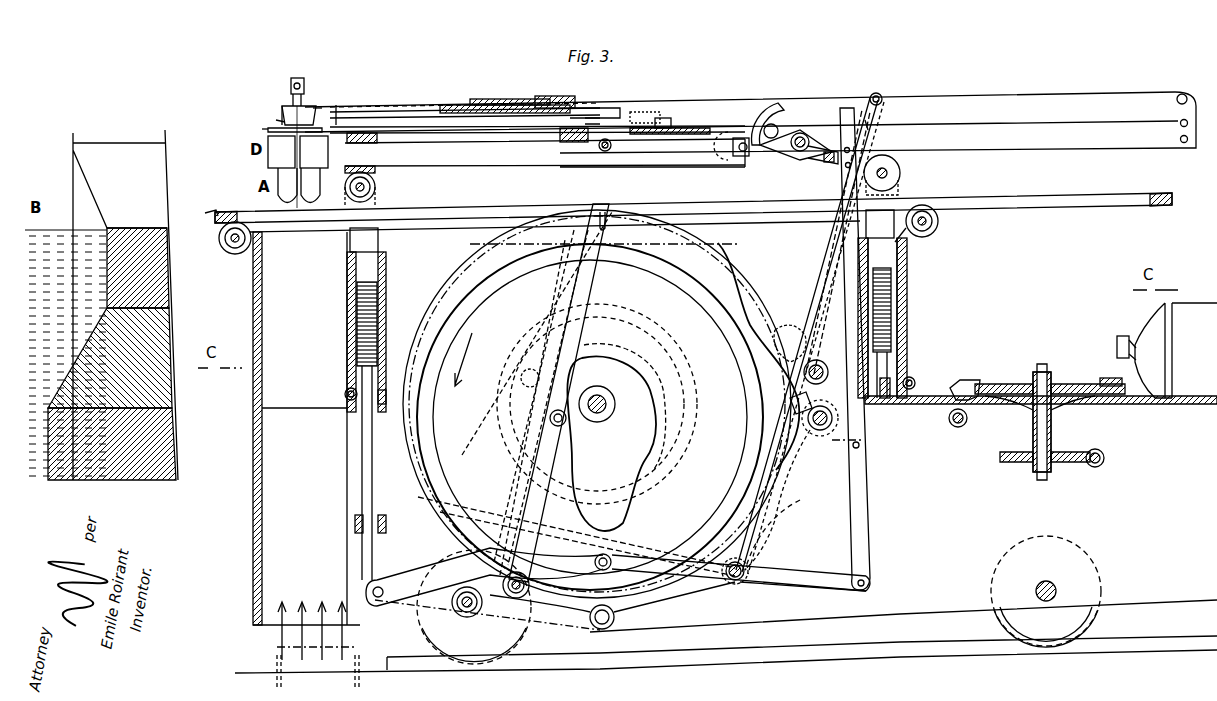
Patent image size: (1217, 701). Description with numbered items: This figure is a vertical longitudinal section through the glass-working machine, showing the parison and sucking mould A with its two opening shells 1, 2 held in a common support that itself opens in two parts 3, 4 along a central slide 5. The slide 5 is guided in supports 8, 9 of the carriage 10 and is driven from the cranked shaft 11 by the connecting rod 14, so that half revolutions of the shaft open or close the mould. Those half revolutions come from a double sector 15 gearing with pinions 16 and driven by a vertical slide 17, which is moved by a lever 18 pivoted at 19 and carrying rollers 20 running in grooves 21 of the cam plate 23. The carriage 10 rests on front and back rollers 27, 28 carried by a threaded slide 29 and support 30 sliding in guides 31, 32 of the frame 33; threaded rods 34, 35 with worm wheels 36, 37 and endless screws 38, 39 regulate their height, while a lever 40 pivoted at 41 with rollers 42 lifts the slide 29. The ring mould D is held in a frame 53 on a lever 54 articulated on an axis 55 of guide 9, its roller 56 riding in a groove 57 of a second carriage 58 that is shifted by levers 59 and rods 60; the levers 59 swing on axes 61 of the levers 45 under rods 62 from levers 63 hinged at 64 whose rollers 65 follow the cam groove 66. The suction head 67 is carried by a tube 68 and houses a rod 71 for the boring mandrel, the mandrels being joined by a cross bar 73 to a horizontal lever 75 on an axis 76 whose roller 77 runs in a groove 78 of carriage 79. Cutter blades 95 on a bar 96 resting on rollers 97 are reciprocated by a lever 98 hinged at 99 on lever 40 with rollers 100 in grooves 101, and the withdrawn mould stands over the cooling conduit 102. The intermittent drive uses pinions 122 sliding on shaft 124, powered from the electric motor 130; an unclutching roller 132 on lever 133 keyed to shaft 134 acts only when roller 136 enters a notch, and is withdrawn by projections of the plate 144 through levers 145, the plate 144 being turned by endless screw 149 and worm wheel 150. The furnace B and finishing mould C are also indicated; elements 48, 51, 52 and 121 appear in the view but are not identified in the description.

The opening shell 1 is at (287, 185).
The opening shell 2 is at (310, 185).
The support part 3 is at (281, 152).
The support part 4 is at (314, 152).
The slide 5 is at (387, 158).
The support 8 is at (361, 133).
The support 9 is at (560, 97).
The carriage 10 is at (486, 178).
The cranked shaft 11 is at (745, 156).
The connecting rod 14 is at (683, 156).
The double sector 15 is at (760, 108).
The pinion 16 is at (728, 158).
The vertical slide 17 is at (846, 183).
The lever 18 is at (638, 562).
The pivot 19 is at (736, 582).
The roller 20 is at (608, 572).
The groove 21 is at (512, 278).
The plate 23 is at (456, 278).
The front rollers 27 is at (376, 188).
The back rollers 28 is at (901, 175).
The slide 29 is at (364, 240).
The support 30 is at (880, 224).
The guide 31 is at (347, 283).
The guide 32 is at (907, 266).
The frame 33 is at (1060, 405).
The screw threaded rod 34 is at (358, 343).
The screw threaded rod 35 is at (907, 321).
The worm wheel 36 is at (386, 395).
The worm wheel 37 is at (894, 405).
The endless screw 38 is at (345, 394).
The endless screw 39 is at (915, 382).
The lever 40 is at (408, 580).
The pivot 41 is at (452, 603).
The roller 42 is at (600, 629).
The lever 45 is at (866, 108).
The top bar 48 is at (1022, 97).
The hopper part 51 is at (280, 118).
The hopper part 52 is at (316, 110).
The frame 53 is at (262, 129).
The lever 54 is at (402, 112).
The axis 55 is at (585, 144).
The roller 56 is at (655, 112).
The groove 57 is at (675, 118).
The second carriage 58 is at (700, 128).
The lever 59 is at (886, 118).
The rod 60 is at (806, 108).
The axis 61 is at (838, 242).
The rod 62 is at (515, 512).
The lever 63 is at (500, 418).
The hinge 64 is at (580, 239).
The roller 65 is at (528, 368).
The cam groove 66 is at (700, 368).
The suction head 67 is at (299, 115).
The tube 68 is at (345, 107).
The rod 71 is at (270, 105).
The cross bar 73 is at (296, 78).
The horizontal lever 75 is at (483, 99).
The axis 76 is at (455, 106).
The roller 77 is at (527, 134).
The groove 78 is at (594, 108).
The carriage 79 is at (602, 111).
The blade 95 is at (215, 202).
The bar 96 is at (428, 214).
The supporting roller 97 is at (233, 255).
The lever 98 is at (559, 393).
The hinge 99 is at (474, 607).
The roller 100 is at (548, 412).
The groove 101 is at (584, 506).
The vertical conduit 102 is at (306, 461).
The hub 121 is at (597, 422).
The pinion 122 is at (828, 430).
The shaft 124 is at (860, 442).
The electric motor 130 is at (1167, 350).
The roller 132 is at (784, 500).
The lever 133 is at (800, 401).
The shaft 134 is at (822, 362).
The roller 136 is at (783, 318).
The plate 144 is at (1062, 382).
The lever 145 is at (968, 414).
The endless screw 149 is at (1104, 459).
The worm wheel 150 is at (1000, 458).